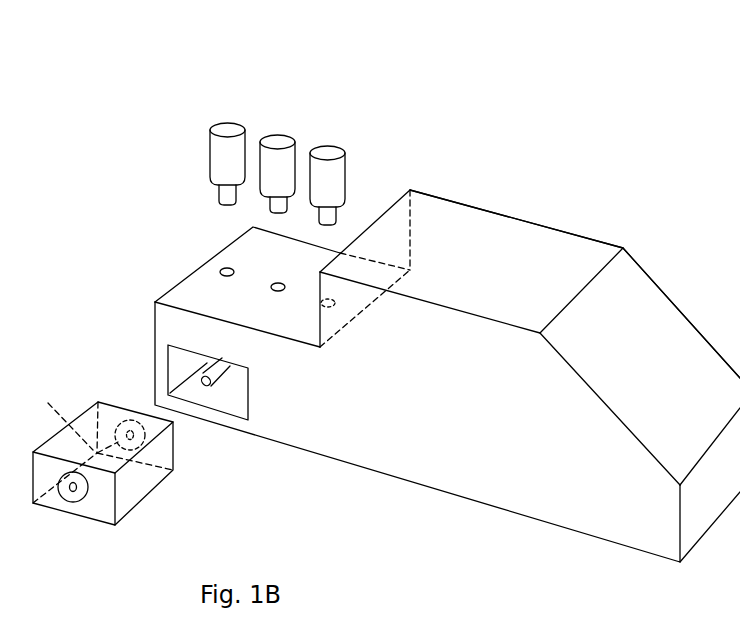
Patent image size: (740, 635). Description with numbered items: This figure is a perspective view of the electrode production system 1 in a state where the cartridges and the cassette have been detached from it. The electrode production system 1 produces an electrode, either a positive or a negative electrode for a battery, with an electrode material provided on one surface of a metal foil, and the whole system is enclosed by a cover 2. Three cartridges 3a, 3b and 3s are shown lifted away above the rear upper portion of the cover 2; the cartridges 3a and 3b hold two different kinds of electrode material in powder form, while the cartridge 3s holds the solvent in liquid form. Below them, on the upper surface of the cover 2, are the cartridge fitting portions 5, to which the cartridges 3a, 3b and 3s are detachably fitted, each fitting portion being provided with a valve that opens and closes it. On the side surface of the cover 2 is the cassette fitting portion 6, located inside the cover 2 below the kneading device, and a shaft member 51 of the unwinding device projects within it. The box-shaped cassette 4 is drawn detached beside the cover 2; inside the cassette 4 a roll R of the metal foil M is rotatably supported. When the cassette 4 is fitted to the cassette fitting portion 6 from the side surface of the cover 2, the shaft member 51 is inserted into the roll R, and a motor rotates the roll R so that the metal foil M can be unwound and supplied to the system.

The electrode production system 1 is at (553, 182).
The cover 2 is at (577, 235).
The cartridge 3s is at (222, 123).
The cartridge 3b is at (280, 137).
The cartridge 3a is at (333, 148).
The cartridge fitting portions 5 is at (322, 301).
The shaft member 51 is at (208, 363).
The cassette fitting portion 6 is at (227, 398).
The cassette 4 is at (143, 480).
The roll R is at (65, 495).
The metal foil M is at (56, 419).